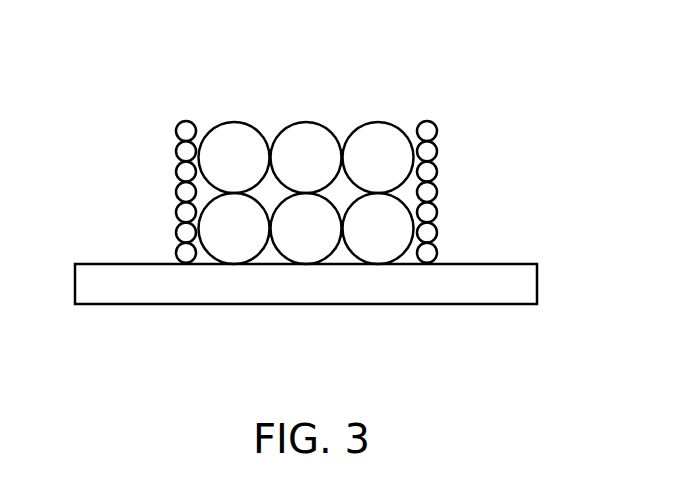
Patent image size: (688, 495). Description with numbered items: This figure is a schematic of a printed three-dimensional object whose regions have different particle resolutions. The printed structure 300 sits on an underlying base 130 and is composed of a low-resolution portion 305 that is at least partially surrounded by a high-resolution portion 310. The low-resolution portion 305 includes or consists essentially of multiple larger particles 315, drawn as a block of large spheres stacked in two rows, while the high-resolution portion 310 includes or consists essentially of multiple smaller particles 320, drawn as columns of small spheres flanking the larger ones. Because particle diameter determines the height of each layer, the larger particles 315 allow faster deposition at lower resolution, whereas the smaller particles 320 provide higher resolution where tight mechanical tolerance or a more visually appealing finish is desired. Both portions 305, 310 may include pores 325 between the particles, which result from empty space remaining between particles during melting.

The printed structure 300 is at (88, 130).
The low-resolution portion 305 is at (312, 96).
The high-resolution portion 310 is at (460, 139).
The larger particles 315 is at (377, 121).
The smaller particles 320 is at (438, 194).
The pores 325 is at (270, 192).
The substrate 130 is at (523, 289).